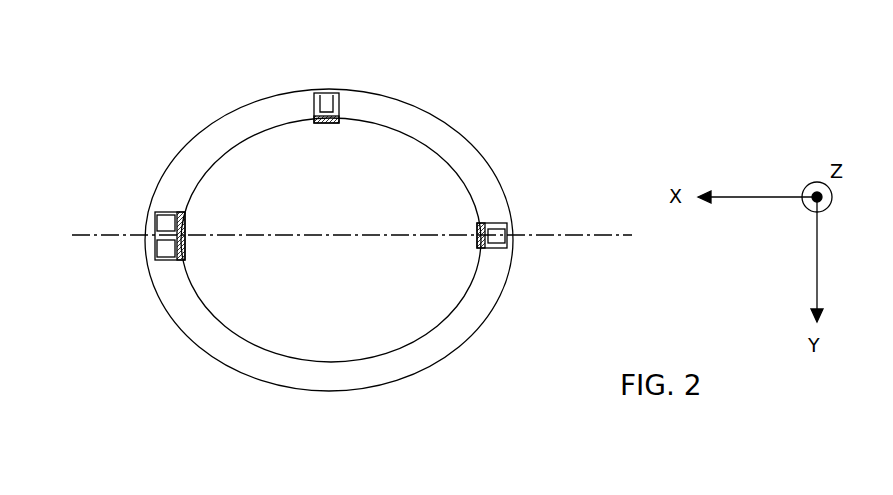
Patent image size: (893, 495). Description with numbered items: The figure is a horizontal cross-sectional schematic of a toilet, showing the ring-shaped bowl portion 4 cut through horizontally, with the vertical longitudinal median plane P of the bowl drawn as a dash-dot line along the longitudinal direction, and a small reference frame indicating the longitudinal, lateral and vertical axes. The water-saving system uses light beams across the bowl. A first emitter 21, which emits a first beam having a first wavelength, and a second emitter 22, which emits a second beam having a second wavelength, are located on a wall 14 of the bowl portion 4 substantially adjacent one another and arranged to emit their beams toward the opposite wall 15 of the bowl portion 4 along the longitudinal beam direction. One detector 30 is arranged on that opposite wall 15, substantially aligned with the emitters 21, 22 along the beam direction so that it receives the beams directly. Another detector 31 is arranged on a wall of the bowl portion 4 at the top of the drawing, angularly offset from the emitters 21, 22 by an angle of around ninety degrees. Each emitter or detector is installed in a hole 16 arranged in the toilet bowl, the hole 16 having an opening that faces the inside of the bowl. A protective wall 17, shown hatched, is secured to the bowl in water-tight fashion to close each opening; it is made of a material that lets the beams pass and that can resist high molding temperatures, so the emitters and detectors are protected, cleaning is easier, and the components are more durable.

The bowl portion 4 is at (342, 240).
The wall 14 is at (175, 183).
The opposite wall 15 is at (493, 200).
The hole 16 is at (350, 107).
The protective wall 17 is at (324, 123).
The first emitter 21 is at (170, 225).
The second emitter 22 is at (170, 248).
The detector 30 is at (497, 237).
The detector 31 is at (324, 110).
The vertical longitudinal median plane P is at (610, 238).